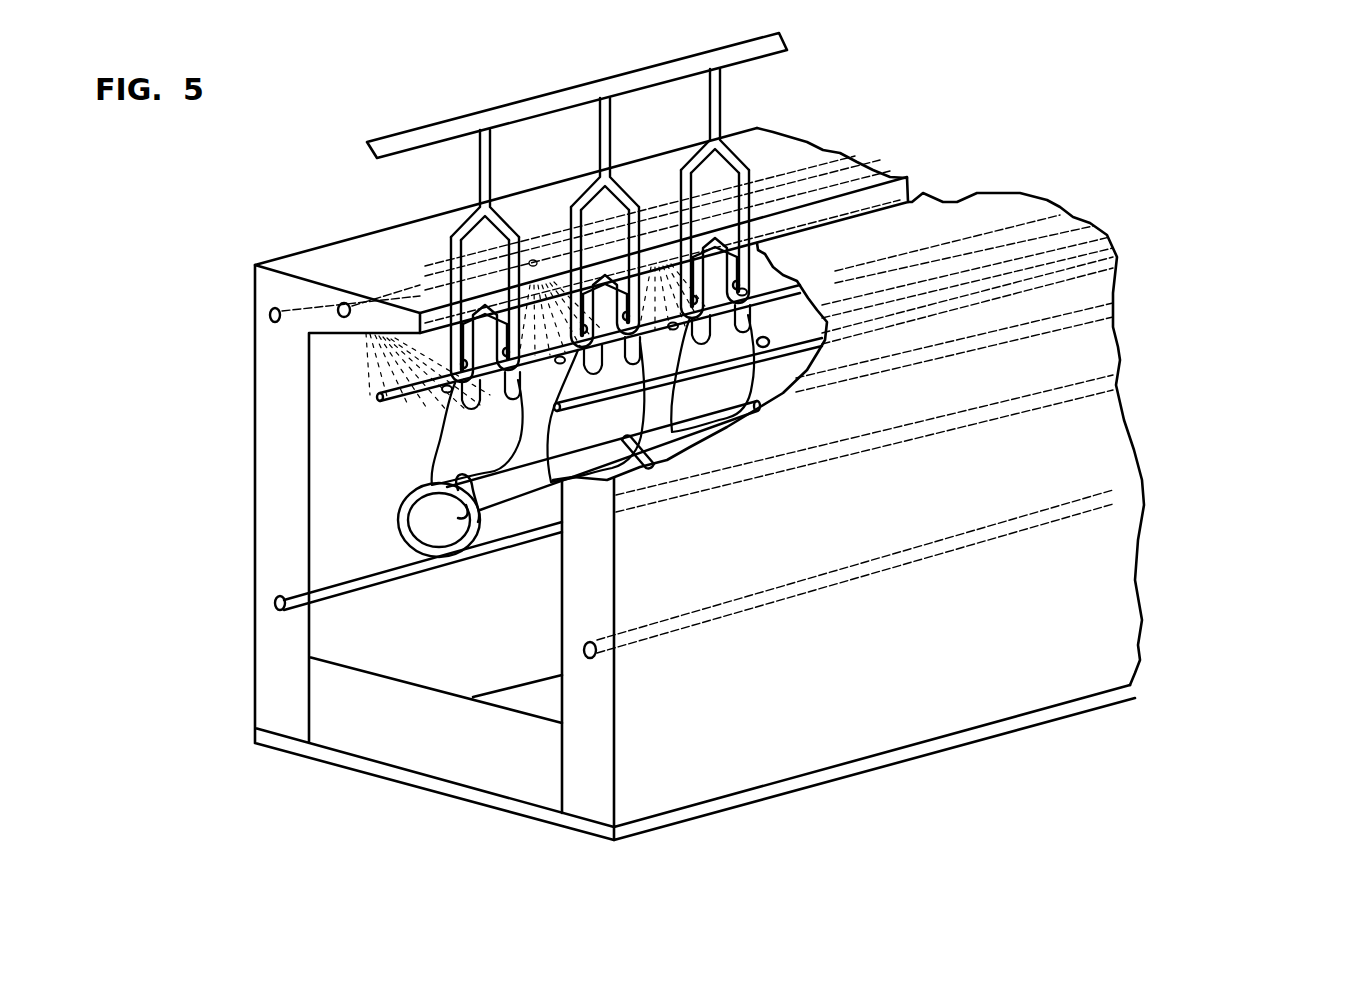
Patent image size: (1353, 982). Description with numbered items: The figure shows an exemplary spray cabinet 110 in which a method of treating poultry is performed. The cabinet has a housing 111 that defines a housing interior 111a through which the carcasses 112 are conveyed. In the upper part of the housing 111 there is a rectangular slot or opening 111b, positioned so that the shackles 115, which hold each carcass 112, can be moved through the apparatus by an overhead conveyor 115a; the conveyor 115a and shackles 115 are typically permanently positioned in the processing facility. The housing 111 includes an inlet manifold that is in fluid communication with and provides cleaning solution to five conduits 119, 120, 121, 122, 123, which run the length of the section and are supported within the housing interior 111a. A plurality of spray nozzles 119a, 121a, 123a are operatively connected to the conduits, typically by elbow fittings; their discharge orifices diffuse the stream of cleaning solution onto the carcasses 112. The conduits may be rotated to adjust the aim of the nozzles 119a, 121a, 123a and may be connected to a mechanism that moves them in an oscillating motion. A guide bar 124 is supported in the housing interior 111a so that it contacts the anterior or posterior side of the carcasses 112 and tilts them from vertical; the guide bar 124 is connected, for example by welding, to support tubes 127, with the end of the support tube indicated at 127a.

The spray cabinet 110 is at (1050, 186).
The housing 111 is at (1146, 630).
The housing interior 111a is at (323, 430).
The rectangular slot or opening 111b is at (888, 187).
The carcass 112 is at (455, 403).
The shackle 115 is at (713, 100).
The overhead conveyor 115a is at (497, 112).
The conduit 119 is at (283, 305).
The spray nozzle 119a is at (312, 287).
The conduit 120 is at (357, 583).
The conduit 121 is at (822, 343).
The spray nozzle 121a is at (766, 338).
The conduit 122 is at (722, 617).
The conduit 123 is at (390, 290).
The spray nozzle 123a is at (533, 258).
The guide bar 124 is at (523, 470).
The support tube 127 is at (650, 462).
The pin receiver 127a is at (760, 408).